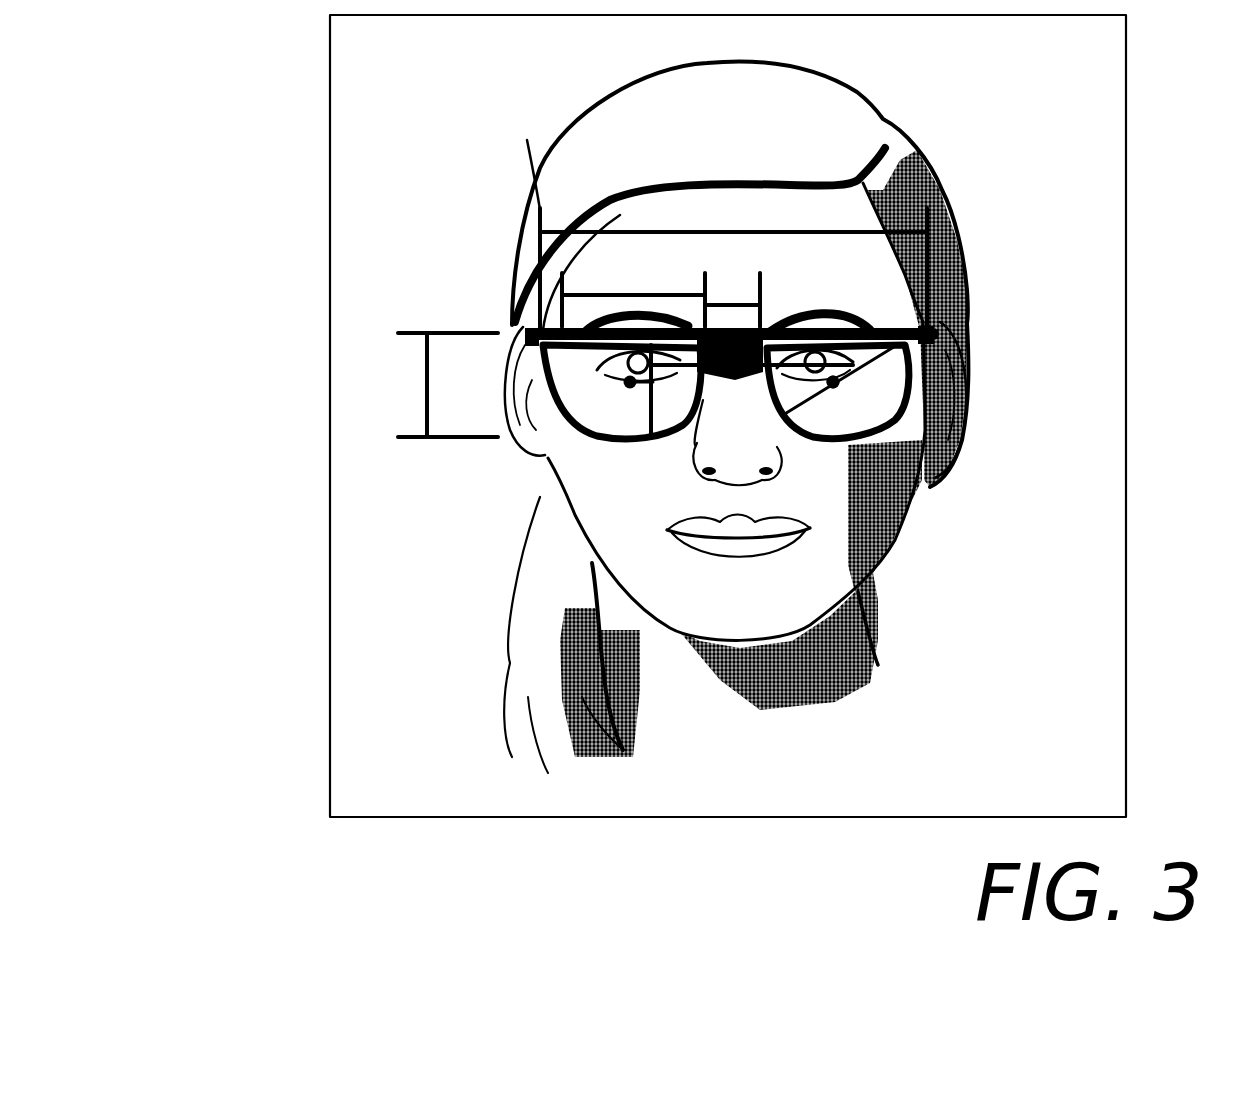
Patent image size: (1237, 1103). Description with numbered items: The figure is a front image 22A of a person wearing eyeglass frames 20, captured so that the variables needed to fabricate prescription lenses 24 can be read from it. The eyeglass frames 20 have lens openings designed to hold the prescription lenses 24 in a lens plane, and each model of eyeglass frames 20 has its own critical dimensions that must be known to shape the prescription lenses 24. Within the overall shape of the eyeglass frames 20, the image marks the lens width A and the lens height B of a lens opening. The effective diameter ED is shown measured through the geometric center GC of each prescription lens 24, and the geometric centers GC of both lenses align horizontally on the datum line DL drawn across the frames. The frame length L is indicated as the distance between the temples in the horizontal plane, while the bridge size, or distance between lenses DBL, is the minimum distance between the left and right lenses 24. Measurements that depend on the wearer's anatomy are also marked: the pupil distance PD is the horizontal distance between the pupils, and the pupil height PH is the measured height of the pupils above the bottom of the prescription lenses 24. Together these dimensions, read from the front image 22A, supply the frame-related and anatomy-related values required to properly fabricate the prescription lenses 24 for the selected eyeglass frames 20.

The eyeglass frames 20 is at (523, 330).
The front image 22A is at (330, 298).
The prescription lenses 24 is at (595, 400).
The frame length L is at (728, 230).
The lens width A is at (630, 293).
The distance between lenses DBL is at (730, 300).
The pupil distance PD is at (693, 337).
The lens height B is at (423, 378).
The pupil height PH is at (605, 410).
The datum line DL is at (737, 392).
The geometric center GC is at (835, 385).
The effective diameter ED is at (795, 395).